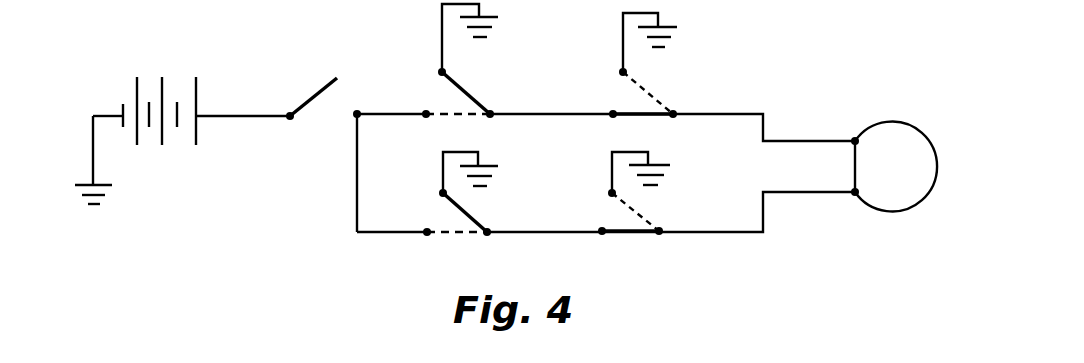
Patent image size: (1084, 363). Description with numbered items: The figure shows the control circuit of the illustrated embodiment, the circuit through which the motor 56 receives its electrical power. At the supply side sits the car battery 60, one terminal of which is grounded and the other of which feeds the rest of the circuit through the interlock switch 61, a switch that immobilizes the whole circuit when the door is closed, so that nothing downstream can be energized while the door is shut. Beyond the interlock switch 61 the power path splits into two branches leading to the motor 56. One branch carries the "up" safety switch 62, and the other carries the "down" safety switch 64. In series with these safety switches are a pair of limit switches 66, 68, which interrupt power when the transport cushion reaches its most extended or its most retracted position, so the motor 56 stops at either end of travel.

The motor 56 is at (883, 122).
The car battery 60 is at (197, 80).
The interlock switch 61 is at (320, 89).
The "up" safety switch 62 is at (499, 57).
The "down" safety switch 64 is at (484, 212).
The limit switch 66 is at (678, 70).
The limit switch 68 is at (656, 212).